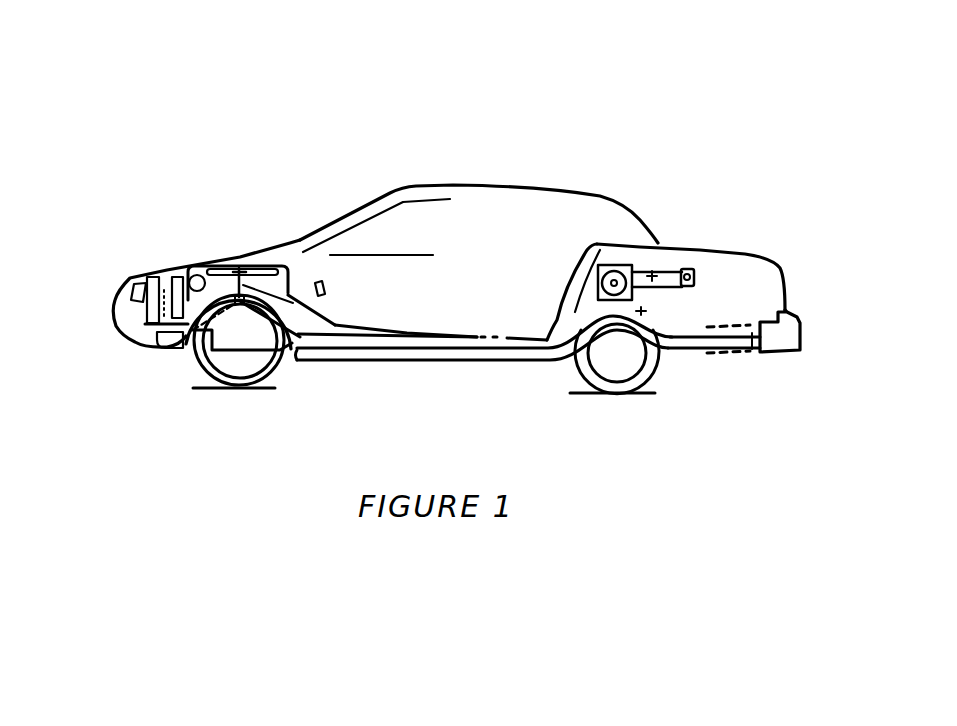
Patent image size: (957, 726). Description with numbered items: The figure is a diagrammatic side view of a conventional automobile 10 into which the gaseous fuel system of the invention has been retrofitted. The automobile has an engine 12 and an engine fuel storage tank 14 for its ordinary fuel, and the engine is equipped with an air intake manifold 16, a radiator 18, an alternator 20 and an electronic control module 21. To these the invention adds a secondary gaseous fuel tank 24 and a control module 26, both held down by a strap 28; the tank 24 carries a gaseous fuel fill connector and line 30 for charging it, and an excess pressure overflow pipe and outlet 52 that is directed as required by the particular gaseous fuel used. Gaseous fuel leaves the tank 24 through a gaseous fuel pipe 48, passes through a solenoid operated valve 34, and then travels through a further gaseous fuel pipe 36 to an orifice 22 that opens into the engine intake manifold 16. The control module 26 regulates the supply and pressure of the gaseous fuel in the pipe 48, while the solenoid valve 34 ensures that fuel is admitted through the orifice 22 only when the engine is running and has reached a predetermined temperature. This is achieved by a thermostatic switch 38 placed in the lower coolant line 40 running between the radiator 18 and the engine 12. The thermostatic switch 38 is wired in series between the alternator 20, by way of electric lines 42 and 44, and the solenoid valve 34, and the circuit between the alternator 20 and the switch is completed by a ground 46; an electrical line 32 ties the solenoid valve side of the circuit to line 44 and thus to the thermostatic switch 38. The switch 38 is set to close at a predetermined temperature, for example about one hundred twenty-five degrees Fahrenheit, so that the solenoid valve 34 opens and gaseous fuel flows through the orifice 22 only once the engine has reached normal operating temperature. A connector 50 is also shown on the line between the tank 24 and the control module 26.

The automobile 10 is at (521, 170).
The engine 12 is at (252, 332).
The engine fuel storage tank 14 is at (712, 336).
The air intake manifold 16 is at (274, 267).
The radiator 18 is at (141, 283).
The alternator 20 is at (194, 276).
The electronic control module 21 is at (320, 282).
The orifice 22 is at (243, 276).
The secondary gaseous fuel tank 24 is at (650, 270).
The control module 26 is at (592, 385).
The strap 28 is at (604, 266).
The gaseous fuel fill connector and line 30 is at (657, 272).
The electrical line 32 is at (513, 341).
The solenoid operated valve 34 is at (238, 292).
The gaseous fuel pipe 36 is at (224, 292).
The thermostatic switch 38 is at (165, 326).
The lower coolant line 40 is at (186, 334).
The electric line 42 is at (160, 278).
The electric line 44 is at (172, 330).
The ground 46 is at (292, 266).
The gaseous fuel pipe 48 is at (427, 354).
The connector 50 is at (693, 268).
The excess pressure overflow pipe and outlet 52 is at (628, 308).